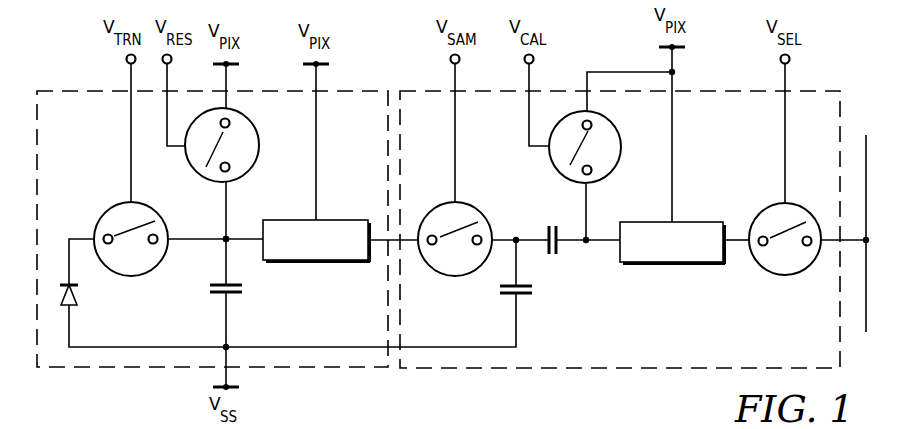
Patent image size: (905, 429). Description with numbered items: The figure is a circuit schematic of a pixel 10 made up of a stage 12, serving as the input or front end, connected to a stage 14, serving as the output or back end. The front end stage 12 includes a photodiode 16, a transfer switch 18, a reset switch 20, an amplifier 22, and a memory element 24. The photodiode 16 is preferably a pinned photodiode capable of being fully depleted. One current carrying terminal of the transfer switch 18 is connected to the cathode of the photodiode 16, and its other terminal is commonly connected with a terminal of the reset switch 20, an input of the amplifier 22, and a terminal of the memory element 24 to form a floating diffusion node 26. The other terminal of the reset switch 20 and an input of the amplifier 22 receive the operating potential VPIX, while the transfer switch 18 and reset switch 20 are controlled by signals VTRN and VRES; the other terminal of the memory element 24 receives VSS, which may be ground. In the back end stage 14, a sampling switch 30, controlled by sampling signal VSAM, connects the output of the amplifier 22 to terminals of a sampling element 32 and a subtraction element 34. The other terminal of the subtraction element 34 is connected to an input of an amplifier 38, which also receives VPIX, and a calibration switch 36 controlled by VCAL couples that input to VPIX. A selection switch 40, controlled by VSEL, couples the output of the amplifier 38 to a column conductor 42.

The pixel 10 is at (690, 404).
The stage 12 is at (349, 91).
The stage 14 is at (843, 77).
The photodiode 16 is at (66, 284).
The transfer switch 18 is at (105, 210).
The reset switch 20 is at (254, 170).
The amplifier 22 is at (296, 263).
The memory element 24 is at (210, 284).
The floating diffusion node 26 is at (223, 238).
The sampling switch 30 is at (452, 277).
The sampling element 32 is at (530, 298).
The subtraction element 34 is at (548, 226).
The calibration switch 36 is at (615, 128).
The amplifier 38 is at (652, 264).
The selection switch 40 is at (762, 211).
The column conductor 42 is at (866, 142).